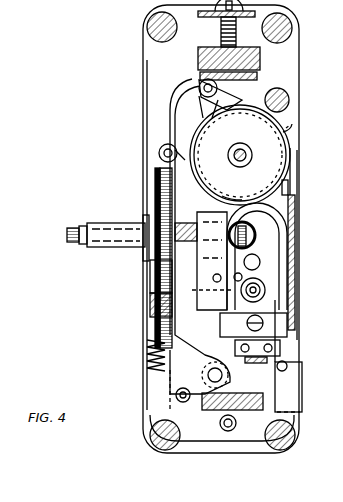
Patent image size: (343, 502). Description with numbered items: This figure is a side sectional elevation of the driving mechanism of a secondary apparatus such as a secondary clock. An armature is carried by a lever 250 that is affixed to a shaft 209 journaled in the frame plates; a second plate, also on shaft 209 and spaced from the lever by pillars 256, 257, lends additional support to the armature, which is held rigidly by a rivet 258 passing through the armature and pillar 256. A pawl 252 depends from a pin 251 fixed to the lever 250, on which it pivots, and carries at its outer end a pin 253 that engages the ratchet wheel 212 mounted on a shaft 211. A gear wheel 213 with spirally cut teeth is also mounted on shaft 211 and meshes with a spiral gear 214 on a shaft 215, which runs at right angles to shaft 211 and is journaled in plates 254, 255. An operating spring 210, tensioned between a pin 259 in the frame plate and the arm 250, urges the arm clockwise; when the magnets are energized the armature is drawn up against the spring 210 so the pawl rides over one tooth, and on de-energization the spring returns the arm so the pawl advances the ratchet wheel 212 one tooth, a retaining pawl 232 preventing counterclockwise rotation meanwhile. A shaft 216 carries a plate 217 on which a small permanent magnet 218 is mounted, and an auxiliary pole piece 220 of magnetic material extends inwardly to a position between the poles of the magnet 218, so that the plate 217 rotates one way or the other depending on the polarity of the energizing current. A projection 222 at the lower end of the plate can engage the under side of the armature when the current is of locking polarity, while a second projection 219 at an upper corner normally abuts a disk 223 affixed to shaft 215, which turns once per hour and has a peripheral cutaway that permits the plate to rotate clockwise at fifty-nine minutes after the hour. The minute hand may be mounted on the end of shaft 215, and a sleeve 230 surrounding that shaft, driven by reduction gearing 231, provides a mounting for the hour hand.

The shaft 209 is at (176, 396).
The operating spring 210 is at (146, 362).
The shaft 211 is at (252, 136).
The ratchet wheel 212 is at (291, 124).
The gear wheel 213 is at (290, 132).
The spiral gear 214 is at (244, 193).
The shaft 215 is at (70, 228).
The shaft 216 is at (256, 290).
The plate 217 is at (203, 280).
The permanent magnet 218 is at (203, 287).
The second projection 219 is at (292, 180).
The auxiliary pole piece 220 is at (287, 366).
The projection 222 is at (290, 392).
The disk 223 is at (289, 188).
The sleeve 230 is at (125, 222).
The reduction gearing 231 is at (151, 278).
The retaining pawl 232 is at (165, 140).
The lever 250 is at (186, 72).
The pin 251 is at (201, 82).
The pawl 252 is at (256, 76).
The pin 253 is at (243, 88).
The plate 254 is at (155, 192).
The plate 255 is at (296, 218).
The pillar 256 is at (219, 423).
The pillar 257 is at (208, 385).
The rivet 258 is at (230, 393).
The pin 259 is at (170, 166).